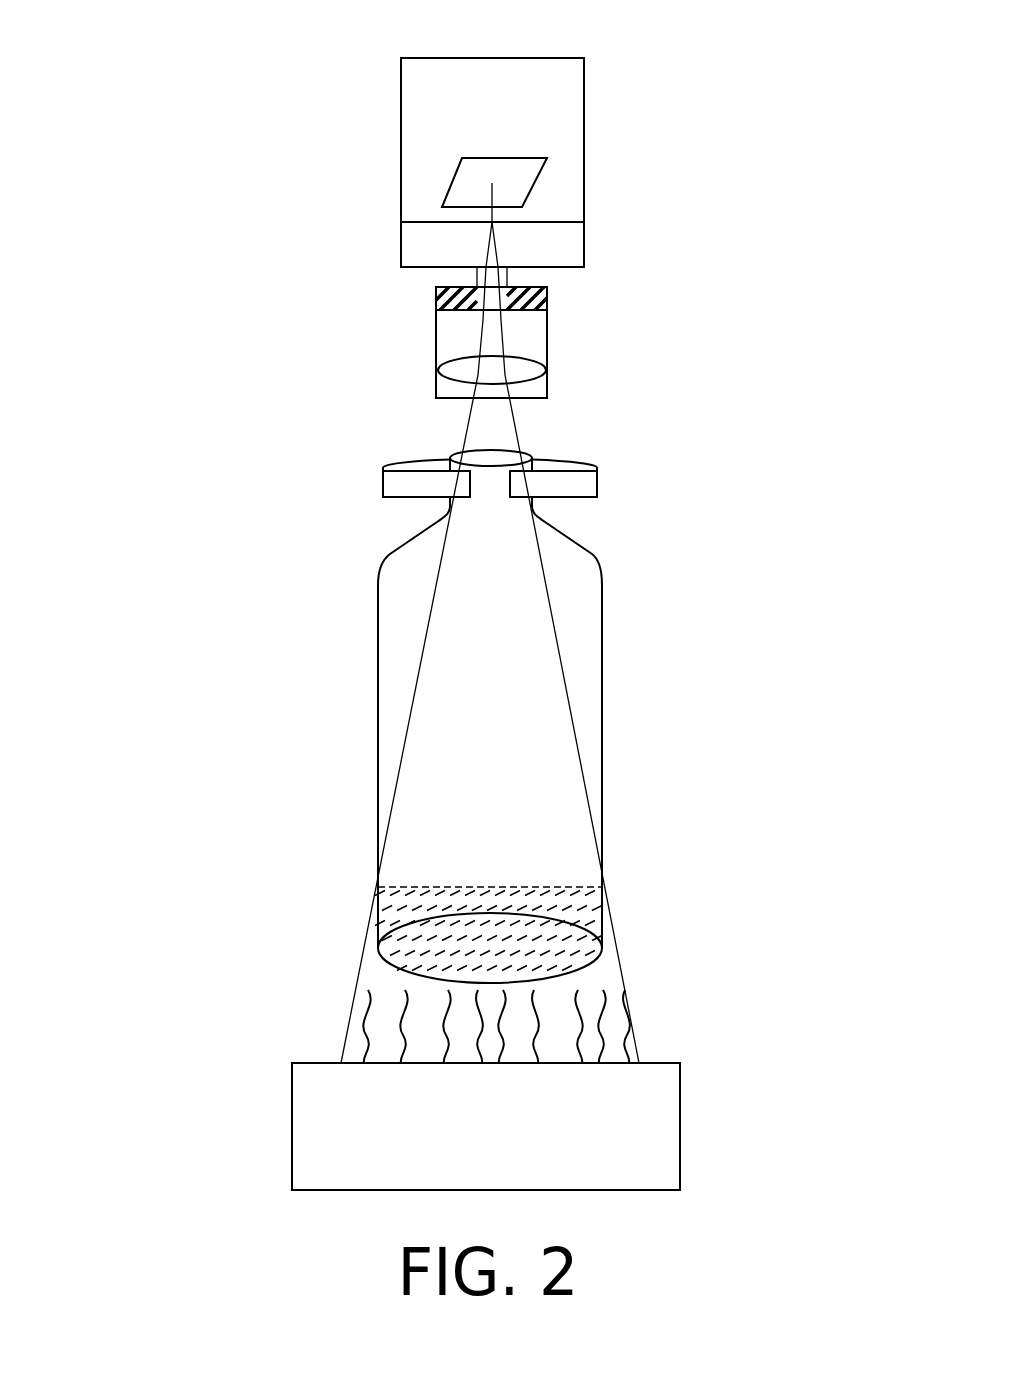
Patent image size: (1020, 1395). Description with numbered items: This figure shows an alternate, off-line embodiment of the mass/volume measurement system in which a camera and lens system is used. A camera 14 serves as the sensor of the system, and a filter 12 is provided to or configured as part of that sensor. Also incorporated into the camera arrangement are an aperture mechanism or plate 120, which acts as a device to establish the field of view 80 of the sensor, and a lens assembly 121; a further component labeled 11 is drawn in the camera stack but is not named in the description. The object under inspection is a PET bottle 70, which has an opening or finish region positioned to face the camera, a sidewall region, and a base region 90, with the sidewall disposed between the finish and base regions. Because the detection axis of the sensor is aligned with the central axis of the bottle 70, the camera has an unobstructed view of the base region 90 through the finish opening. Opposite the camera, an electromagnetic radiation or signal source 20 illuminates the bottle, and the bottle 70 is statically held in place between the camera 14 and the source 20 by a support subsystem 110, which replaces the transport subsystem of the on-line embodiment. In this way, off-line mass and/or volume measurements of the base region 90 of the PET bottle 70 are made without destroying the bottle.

The camera 14 is at (492, 162).
The camera array sensor 11 is at (548, 145).
The filter 12 is at (565, 243).
The aperture mechanism or plate 120 is at (553, 297).
The lens assembly 121 is at (550, 365).
The support subsystem 110 is at (372, 468).
The PET bottle 70 is at (603, 628).
The field of view 80 is at (403, 791).
The base region 90 is at (605, 907).
The electromagnetic radiation or signal source 20 is at (486, 1090).